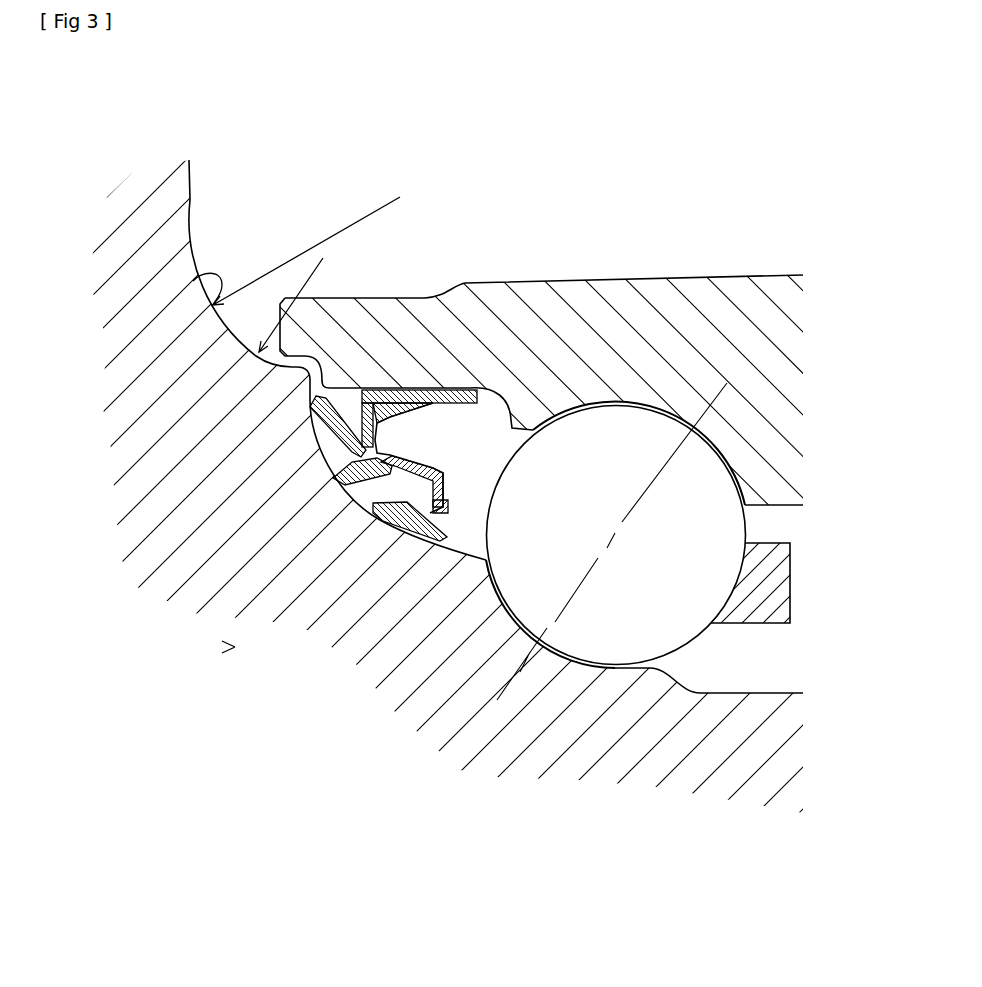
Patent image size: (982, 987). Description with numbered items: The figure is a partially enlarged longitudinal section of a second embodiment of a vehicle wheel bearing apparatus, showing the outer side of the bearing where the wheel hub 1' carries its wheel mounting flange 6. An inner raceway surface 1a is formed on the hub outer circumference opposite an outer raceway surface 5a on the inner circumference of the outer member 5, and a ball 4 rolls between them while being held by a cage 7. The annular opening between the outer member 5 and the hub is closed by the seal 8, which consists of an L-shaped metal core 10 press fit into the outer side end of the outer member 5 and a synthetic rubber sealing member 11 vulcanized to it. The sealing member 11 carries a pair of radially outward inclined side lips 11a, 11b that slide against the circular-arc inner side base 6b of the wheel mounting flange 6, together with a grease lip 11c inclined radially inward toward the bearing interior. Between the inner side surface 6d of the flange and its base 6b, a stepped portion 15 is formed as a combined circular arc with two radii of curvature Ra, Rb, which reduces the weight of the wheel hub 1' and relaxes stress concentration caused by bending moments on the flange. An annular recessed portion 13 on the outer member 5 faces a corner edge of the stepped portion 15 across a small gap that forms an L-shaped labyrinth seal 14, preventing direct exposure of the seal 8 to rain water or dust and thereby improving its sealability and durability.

The wheel hub 1' is at (167, 653).
The inner raceway surface 1a is at (493, 592).
The ball 4 is at (695, 535).
The outer member 5 is at (491, 493).
The outer raceway surface 5a is at (688, 445).
The wheel mounting flange 6 is at (491, 493).
The inner side base 6b is at (397, 500).
The inner side surface 6d is at (192, 183).
The cage 7 is at (760, 593).
The seal 8 is at (303, 399).
The metal core 10 is at (392, 392).
The sealing member 11 is at (314, 468).
The side lip 11a is at (315, 405).
The side lip 11b is at (374, 505).
The grease lip 11c is at (335, 482).
The annular recessed portion 13 is at (318, 392).
The labyrinth seal 14 is at (298, 363).
The stepped portion 15 is at (193, 281).
The radius of curvature Ra is at (306, 251).
The radius of curvature Rb is at (291, 305).